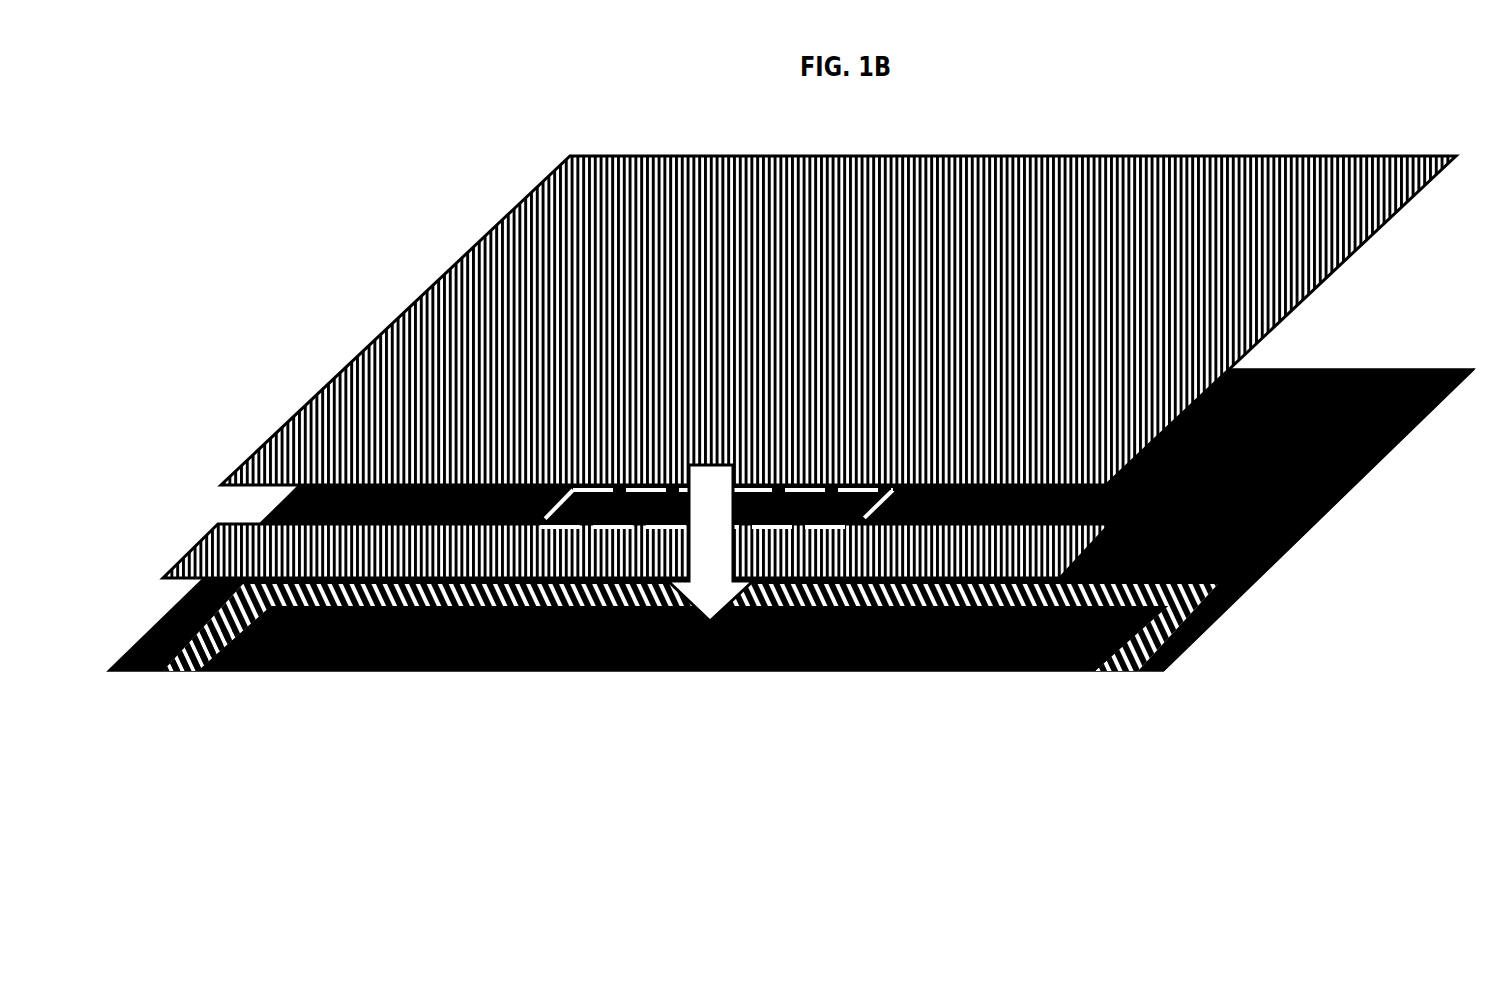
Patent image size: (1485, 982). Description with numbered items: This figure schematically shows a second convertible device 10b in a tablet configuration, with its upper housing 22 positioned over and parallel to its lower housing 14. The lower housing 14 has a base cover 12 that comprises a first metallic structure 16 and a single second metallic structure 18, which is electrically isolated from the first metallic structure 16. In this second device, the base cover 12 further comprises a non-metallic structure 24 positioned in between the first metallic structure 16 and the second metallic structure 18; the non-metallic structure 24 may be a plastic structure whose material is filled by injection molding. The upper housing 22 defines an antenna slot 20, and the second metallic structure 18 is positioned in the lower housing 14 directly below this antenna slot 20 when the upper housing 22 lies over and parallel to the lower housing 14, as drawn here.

The second convertible device 10b is at (316, 167).
The base cover 12 is at (1386, 472).
The lower housing 14 is at (1079, 672).
The first metallic structure 16 is at (1226, 595).
The second metallic structure 18 is at (985, 665).
The antenna slot 20 is at (585, 483).
The upper housing 22 is at (192, 537).
The non-metallic structure 24 is at (163, 659).